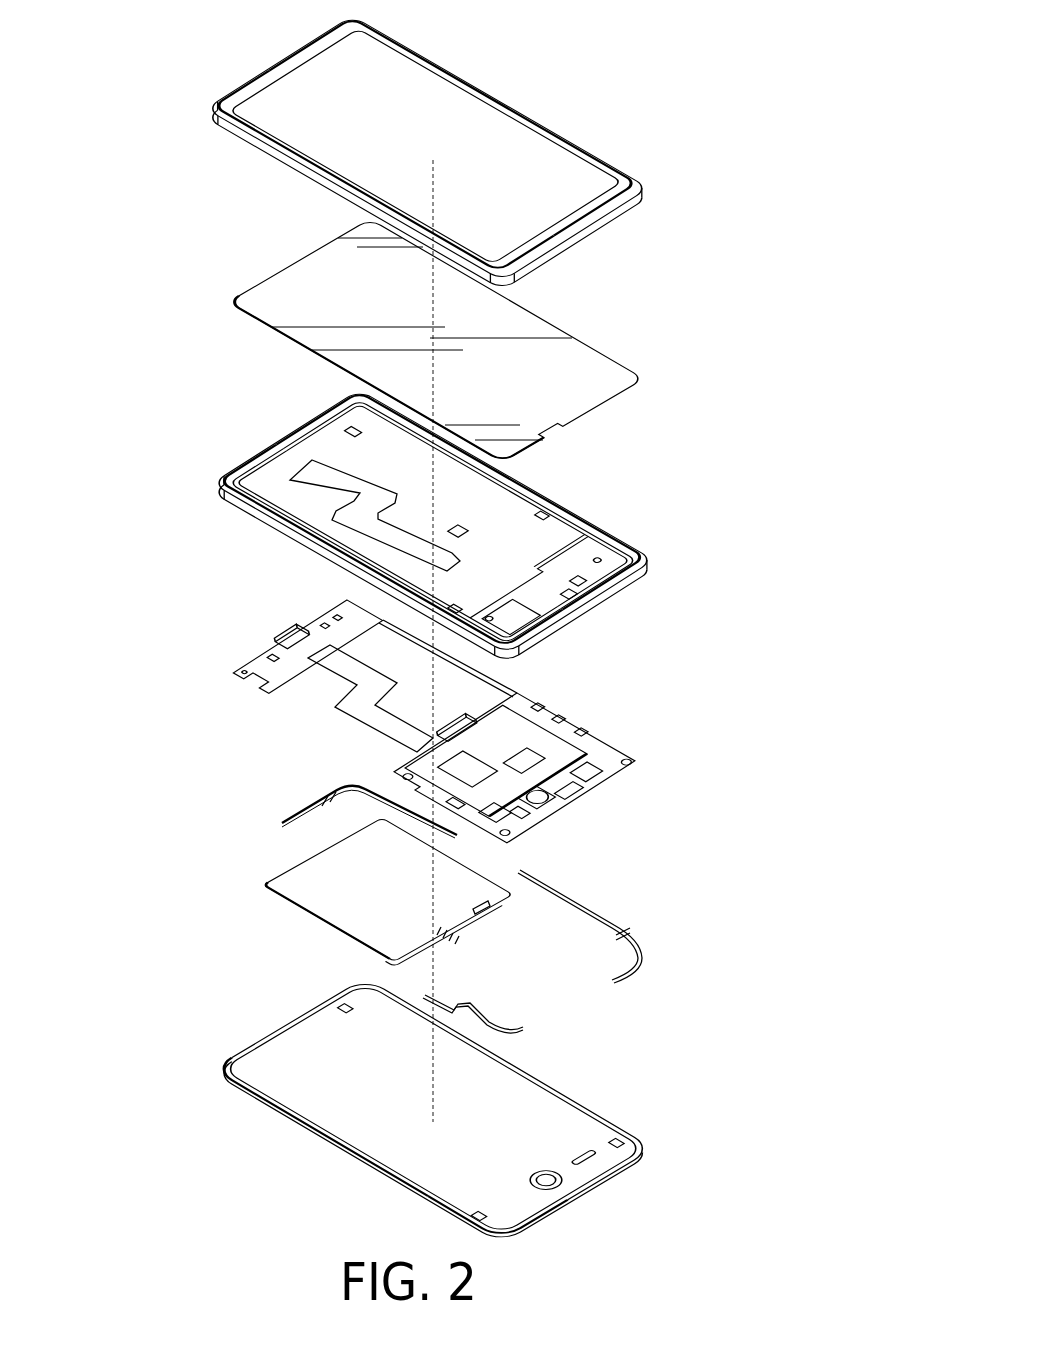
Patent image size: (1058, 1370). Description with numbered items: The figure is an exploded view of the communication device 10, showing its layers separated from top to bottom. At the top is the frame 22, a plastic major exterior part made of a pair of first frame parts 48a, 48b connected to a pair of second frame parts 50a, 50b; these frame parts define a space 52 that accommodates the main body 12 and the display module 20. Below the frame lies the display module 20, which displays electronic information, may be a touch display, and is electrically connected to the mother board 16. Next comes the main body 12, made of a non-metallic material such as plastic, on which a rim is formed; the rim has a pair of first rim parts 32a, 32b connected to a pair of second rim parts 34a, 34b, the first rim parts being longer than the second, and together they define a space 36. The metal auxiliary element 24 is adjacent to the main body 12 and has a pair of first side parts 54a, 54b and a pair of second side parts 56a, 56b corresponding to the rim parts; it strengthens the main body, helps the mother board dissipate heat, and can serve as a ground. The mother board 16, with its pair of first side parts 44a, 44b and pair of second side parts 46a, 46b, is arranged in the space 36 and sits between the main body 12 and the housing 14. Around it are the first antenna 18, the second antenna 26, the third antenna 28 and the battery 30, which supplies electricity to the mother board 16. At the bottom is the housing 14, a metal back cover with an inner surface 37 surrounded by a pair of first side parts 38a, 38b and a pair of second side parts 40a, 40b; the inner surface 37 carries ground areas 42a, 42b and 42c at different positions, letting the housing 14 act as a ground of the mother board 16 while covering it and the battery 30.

The communication device 10 is at (720, 70).
The main body 12 is at (190, 503).
The housing 14 is at (190, 1080).
The mother board 16 is at (190, 697).
The first antenna 18 is at (298, 798).
The display module 20 is at (613, 383).
The frame 22 is at (205, 100).
The auxiliary element 24 is at (612, 535).
The second antenna 26 is at (612, 908).
The third antenna 28 is at (532, 1030).
The battery 30 is at (447, 890).
The first rim part 32a is at (391, 546).
The first rim part 32b is at (460, 501).
The second rim part 34a is at (433, 521).
The second rim part 34b is at (433, 514).
The space 36 is at (367, 490).
The inner surface 37 is at (433, 1108).
The first side part 38a is at (330, 1127).
The first side part 38b is at (509, 1114).
The second side part 40a is at (497, 1198).
The second side part 40b is at (341, 1043).
The ground area 42a is at (345, 1008).
The ground area 42b is at (616, 1142).
The ground area 42c is at (478, 1215).
The first side part 44a is at (377, 772).
The first side part 44b is at (533, 680).
The second side part 46a is at (583, 797).
The second side part 46b is at (307, 620).
The first frame part 48a is at (383, 171).
The first frame part 48b is at (452, 127).
The second frame part 50a is at (427, 148).
The second frame part 50b is at (427, 141).
The space 52 is at (287, 60).
The first side part 54a is at (455, 608).
The first side part 54b is at (542, 515).
The second side part 56a is at (549, 594).
The second side part 56b is at (405, 481).